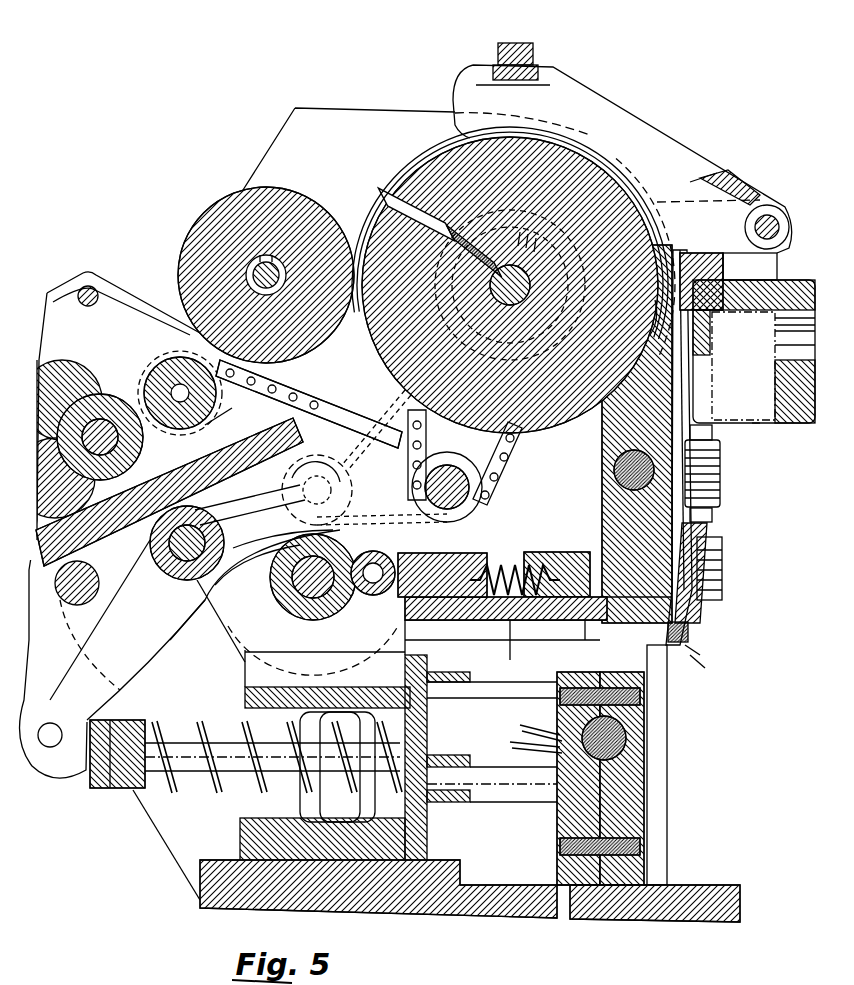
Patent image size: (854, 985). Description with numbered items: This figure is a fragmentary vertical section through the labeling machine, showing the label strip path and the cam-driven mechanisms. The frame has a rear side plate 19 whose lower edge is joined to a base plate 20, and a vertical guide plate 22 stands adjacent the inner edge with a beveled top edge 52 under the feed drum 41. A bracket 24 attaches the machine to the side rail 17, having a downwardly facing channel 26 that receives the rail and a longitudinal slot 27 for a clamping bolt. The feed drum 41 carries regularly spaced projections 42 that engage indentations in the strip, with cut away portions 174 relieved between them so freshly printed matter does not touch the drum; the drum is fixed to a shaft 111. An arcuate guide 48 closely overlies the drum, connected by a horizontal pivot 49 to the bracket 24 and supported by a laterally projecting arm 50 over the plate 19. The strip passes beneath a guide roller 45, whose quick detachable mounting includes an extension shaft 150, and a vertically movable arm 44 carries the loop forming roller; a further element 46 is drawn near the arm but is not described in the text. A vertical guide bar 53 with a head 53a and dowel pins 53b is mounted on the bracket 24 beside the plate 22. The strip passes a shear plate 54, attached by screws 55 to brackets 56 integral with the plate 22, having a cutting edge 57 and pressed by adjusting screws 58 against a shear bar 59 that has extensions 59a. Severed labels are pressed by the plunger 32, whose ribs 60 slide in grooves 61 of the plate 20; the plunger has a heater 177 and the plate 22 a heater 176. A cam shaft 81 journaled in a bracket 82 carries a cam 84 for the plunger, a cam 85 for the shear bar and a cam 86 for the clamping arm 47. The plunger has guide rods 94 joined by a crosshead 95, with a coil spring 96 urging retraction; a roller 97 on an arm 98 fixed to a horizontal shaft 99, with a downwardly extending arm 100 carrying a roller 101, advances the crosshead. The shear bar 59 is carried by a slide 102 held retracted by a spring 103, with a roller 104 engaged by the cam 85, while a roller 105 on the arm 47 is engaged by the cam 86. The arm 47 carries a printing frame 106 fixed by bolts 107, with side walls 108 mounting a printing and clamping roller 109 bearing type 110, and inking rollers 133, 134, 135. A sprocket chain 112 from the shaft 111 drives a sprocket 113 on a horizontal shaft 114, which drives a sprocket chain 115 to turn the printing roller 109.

The side rail 17 is at (752, 425).
The rear vertical side plate 19 is at (338, 108).
The base plate 20 is at (530, 910).
The vertical guide plate 22 is at (610, 442).
The bracket 24 is at (783, 282).
The downwardly facing channel 26 is at (738, 312).
The longitudinal slot 27 is at (778, 368).
The plunger 32 is at (645, 812).
The feed drum 41 is at (430, 140).
The projections 42 is at (402, 177).
The vertically movable arm 44 is at (84, 646).
The guide roller 45 is at (220, 205).
The pin 46 is at (88, 286).
The vertically movable arm 47 is at (161, 570).
The arcuate guide 48 is at (680, 143).
The horizontal pivot 49 is at (772, 205).
The laterally projecting arm 50 is at (503, 43).
The beveled top edge 52 is at (655, 312).
The vertical guide bar 53 is at (690, 395).
The head 53a is at (695, 253).
The dowel pins 53b is at (750, 265).
The shear plate 54 is at (708, 565).
The screws 55 is at (722, 588).
The brackets 56 is at (720, 492).
The cutting edge 57 is at (695, 632).
The adjusting screws 58 is at (715, 515).
The shear bar 59 is at (690, 655).
The extensions 59a is at (695, 648).
The ribs 60 is at (655, 886).
The grooves 61 is at (728, 886).
The cam shaft 81 is at (283, 590).
The bracket 82 is at (560, 553).
The cam 84 is at (290, 628).
The cam 85 is at (325, 618).
The cam 86 is at (370, 552).
The horizontal guide rods 94 is at (180, 745).
The crosshead 95 is at (108, 790).
The coil spring 96 is at (170, 793).
The roller 97 is at (225, 552).
The arm 98 is at (226, 560).
The horizontal shaft 99 is at (208, 606).
The downwardly extending arm 100 is at (146, 668).
The roller 101 is at (52, 770).
The slide 102 is at (508, 642).
The spring 103 is at (505, 565).
The roller 104 is at (442, 575).
The roller 105 is at (325, 460).
The printing frame 106 is at (99, 588).
The bolts 107 is at (228, 503).
The side walls 108 is at (125, 291).
The printing and clamping roller 109 is at (225, 407).
The type 110 is at (158, 440).
The shaft 111 is at (510, 282).
The sprocket chain 112 is at (478, 392).
The sprocket 113 is at (450, 452).
The horizontal shaft 114 is at (485, 495).
The sprocket chain 115 is at (300, 398).
The inking roller 133 is at (95, 392).
The inking roller 134 is at (112, 534).
The inking roller 135 is at (60, 385).
The extension shaft 150 is at (260, 257).
The cut away portions 174 is at (620, 265).
The heater 176 is at (634, 490).
The heater 177 is at (628, 745).